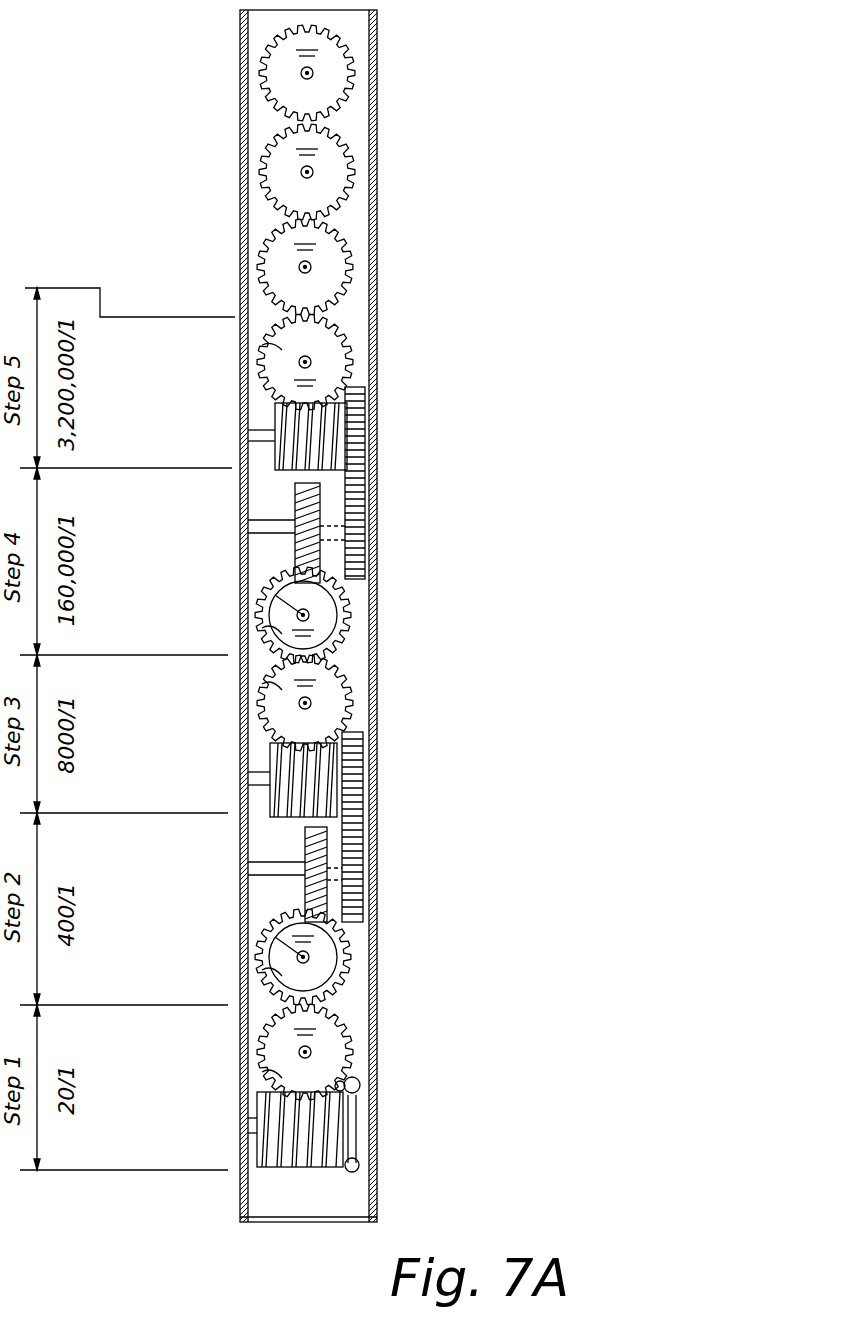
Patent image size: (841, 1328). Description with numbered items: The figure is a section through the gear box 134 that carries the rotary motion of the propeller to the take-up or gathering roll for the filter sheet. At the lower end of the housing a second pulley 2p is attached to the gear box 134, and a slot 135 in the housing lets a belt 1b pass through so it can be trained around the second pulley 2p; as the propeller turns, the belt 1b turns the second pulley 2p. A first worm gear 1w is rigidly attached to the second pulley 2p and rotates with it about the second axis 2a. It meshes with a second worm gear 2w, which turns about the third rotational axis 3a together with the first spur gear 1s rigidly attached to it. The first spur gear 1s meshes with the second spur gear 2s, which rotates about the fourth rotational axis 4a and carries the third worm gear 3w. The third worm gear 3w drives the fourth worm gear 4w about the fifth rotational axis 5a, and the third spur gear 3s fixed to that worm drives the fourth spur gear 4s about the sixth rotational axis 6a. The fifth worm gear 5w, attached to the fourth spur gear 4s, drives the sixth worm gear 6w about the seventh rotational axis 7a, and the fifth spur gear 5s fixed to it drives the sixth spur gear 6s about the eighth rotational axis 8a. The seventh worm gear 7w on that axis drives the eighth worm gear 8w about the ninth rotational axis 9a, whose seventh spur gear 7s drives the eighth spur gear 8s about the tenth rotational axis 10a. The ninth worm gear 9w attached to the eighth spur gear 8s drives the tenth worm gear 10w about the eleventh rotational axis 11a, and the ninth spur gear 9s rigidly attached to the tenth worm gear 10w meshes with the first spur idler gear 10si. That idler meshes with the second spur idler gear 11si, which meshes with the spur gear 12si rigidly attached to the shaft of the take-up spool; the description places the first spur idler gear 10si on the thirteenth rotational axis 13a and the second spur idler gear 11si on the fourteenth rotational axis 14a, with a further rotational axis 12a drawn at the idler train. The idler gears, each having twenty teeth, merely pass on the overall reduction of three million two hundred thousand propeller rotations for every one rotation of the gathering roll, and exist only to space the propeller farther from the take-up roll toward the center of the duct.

The gear box 134 is at (377, 22).
The spur gear 12si is at (345, 62).
The fourteenth rotational axis 14a is at (301, 73).
The second spur idler gear 11si is at (338, 176).
The thirteenth rotational axis 13a is at (301, 172).
The first spur idler gear 10si is at (338, 258).
The axle 12a is at (299, 267).
The ninth spur gear 9s is at (340, 343).
The eleventh rotational axis 11a is at (299, 363).
The tenth worm gear 10w is at (262, 348).
The ninth worm gear 9w is at (278, 418).
The tenth rotational axis 10a is at (250, 435).
The eighth spur gear 8s is at (363, 410).
The seventh spur gear 7s is at (322, 506).
The eighth worm gear 8w is at (295, 496).
The ninth rotational axis 9a is at (252, 536).
The sixth spur gear 6s is at (346, 600).
The eighth rotational axis 8a is at (298, 613).
The seventh worm gear 7w is at (265, 631).
The fifth spur gear 5s is at (346, 688).
The seventh rotational axis 7a is at (299, 704).
The sixth worm gear 6w is at (266, 685).
The fifth worm gear 5w is at (272, 808).
The sixth rotational axis 6a is at (250, 792).
The fourth spur gear 4s is at (356, 787).
The third spur gear 3s is at (352, 850).
The fourth worm gear 4w is at (305, 847).
The fifth rotational axis 5a is at (248, 867).
The second spur gear 2s is at (348, 957).
The fourth rotational axis 4a is at (298, 955).
The third worm gear 3w is at (266, 973).
The first spur gear 1s is at (344, 1021).
The third rotational axis 3a is at (299, 1052).
The second worm gear 2w is at (266, 1077).
The slot 135 is at (362, 1080).
The belt 1b is at (360, 1084).
The second pulley 2p is at (352, 1130).
The first worm gear 1w is at (282, 1165).
The second axis of rotation 2a is at (250, 1128).